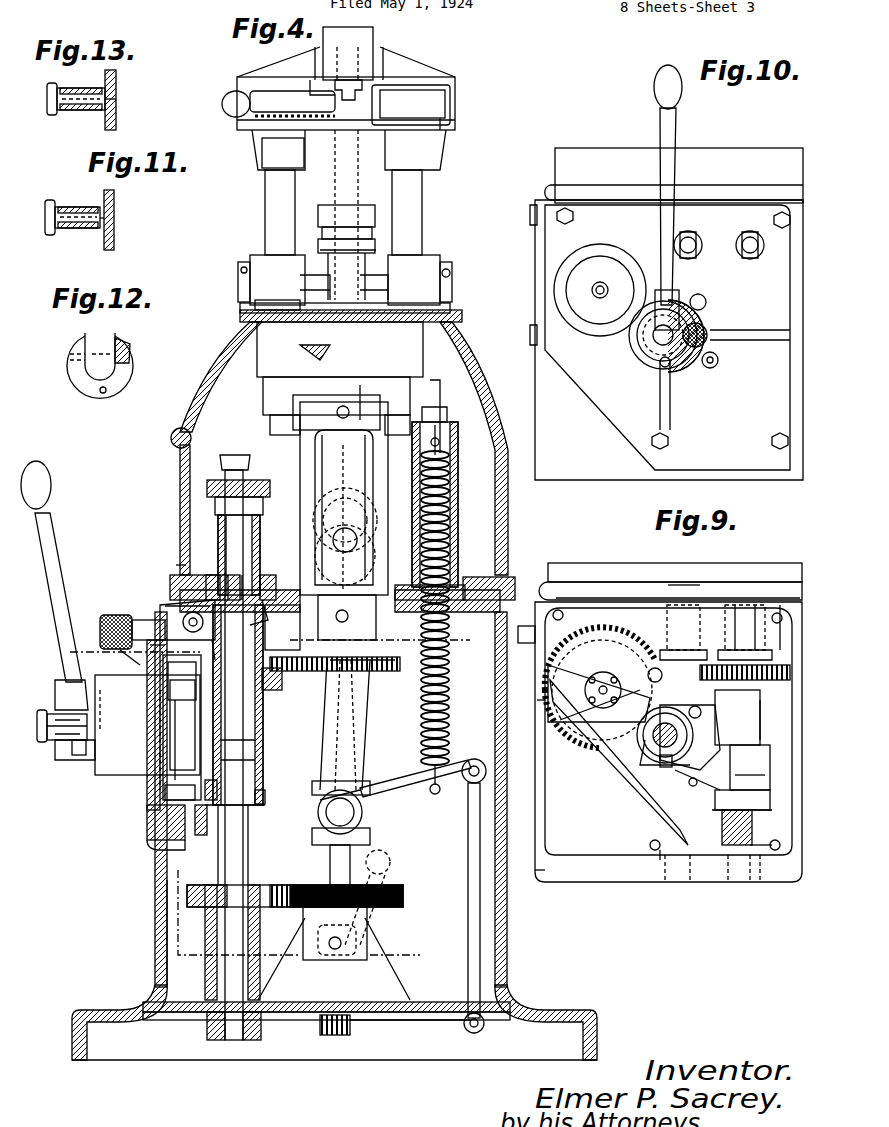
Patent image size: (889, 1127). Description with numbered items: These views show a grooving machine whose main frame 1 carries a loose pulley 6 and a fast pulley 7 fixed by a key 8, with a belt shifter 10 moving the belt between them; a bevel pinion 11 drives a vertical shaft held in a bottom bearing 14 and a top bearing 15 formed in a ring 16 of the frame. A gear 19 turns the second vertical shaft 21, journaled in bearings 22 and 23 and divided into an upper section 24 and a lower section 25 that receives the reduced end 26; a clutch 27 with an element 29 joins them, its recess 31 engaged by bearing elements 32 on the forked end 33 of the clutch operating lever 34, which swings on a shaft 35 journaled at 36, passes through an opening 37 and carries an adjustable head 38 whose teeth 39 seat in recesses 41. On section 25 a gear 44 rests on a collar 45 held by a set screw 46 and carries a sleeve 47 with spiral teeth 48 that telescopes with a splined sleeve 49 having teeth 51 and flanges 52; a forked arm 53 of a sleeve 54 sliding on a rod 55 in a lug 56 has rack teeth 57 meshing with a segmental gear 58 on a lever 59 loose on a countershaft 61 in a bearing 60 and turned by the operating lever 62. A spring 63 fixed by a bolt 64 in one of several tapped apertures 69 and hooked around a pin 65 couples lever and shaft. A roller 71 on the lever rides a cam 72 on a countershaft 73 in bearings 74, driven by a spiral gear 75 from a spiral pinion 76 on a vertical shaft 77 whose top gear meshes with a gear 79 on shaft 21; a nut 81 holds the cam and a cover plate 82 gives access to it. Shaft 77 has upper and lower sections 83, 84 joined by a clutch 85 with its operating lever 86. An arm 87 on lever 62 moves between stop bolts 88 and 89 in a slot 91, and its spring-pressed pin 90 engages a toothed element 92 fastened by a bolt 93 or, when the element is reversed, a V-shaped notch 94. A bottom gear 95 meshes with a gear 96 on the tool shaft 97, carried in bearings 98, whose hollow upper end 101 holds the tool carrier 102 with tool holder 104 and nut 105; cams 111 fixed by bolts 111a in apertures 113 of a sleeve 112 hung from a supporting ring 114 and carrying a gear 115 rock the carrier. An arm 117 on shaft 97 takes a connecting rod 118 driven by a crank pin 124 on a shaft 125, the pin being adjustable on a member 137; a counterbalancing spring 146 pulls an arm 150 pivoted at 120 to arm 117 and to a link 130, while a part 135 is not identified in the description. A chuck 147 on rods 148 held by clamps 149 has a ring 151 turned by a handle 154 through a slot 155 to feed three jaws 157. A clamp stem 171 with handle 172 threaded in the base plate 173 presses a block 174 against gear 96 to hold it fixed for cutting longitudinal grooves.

In FIG. 4, the main frame 1 is at (200, 386).
In FIG. 10, the main frame 1 is at (555, 170).
In FIG. 9, the main frame 1 is at (560, 566).
In FIG. 4, the loose pulley 6 is at (100, 638).
In FIG. 9, the loose pulley 6 is at (537, 636).
In FIG. 4, the fast pulley 7 is at (145, 660).
In FIG. 9, the fast pulley 7 is at (545, 690).
In FIG. 4, the key 8 is at (155, 878).
In FIG. 9, the key 8 is at (531, 880).
In FIG. 4, the belt shifter 10 is at (510, 586).
In FIG. 10, the second pinion 11 is at (688, 392).
In FIG. 4, the bearing 14 is at (222, 106).
In FIG. 10, the bearing 15 is at (550, 190).
In FIG. 4, the ring 16 is at (200, 578).
In FIG. 9, the ring 16 is at (576, 575).
In FIG. 4, the gear 19 is at (212, 503).
In FIG. 4, the second vertical shaft 21 is at (240, 476).
In FIG. 9, the second vertical shaft 21 is at (756, 600).
In FIG. 4, the bearing 22 is at (258, 546).
In FIG. 4, the bearing 23 is at (252, 965).
In FIG. 9, the bearing 23 is at (730, 600).
In FIG. 4, the upper section 24 is at (246, 520).
In FIG. 4, the lower section 25 is at (250, 836).
In FIG. 9, the lower section 25 is at (760, 882).
In FIG. 4, the reduced lower end 26 is at (258, 640).
In FIG. 4, the clutch 27 is at (276, 592).
In FIG. 9, the clutch 27 is at (789, 593).
In FIG. 4, the clutch element 29 is at (220, 580).
In FIG. 4, the circumferential recess 31 is at (242, 575).
In FIG. 4, the bearing elements 32 is at (228, 638).
In FIG. 4, the forked end 33 is at (180, 576).
In FIG. 4, the clutch operating lever 34 is at (150, 650).
In FIG. 10, the clutch operating lever 34 is at (764, 252).
In FIG. 4, the shaft 35 is at (165, 604).
In FIG. 4, the journal 36 is at (183, 616).
In FIG. 4, the opening 37 is at (135, 600).
In FIG. 4, the adjustable head 38 is at (112, 652).
In FIG. 4, the teeth 39 is at (100, 624).
In FIG. 4, the recesses 41 is at (135, 620).
In FIG. 4, the gear 44 is at (331, 655).
In FIG. 9, the gear 44 is at (718, 668).
In FIG. 4, the collar 45 is at (268, 678).
In FIG. 4, the set screw 46 is at (268, 690).
In FIG. 4, the sleeve 47 is at (262, 716).
In FIG. 9, the sleeve 47 is at (760, 706).
In FIG. 4, the spiral teeth 48 is at (262, 730).
In FIG. 4, the second sleeve 49 is at (262, 768).
In FIG. 9, the second sleeve 49 is at (765, 753).
In FIG. 4, the spirally arranged teeth 51 is at (249, 749).
In FIG. 4, the flanges 52 is at (262, 785).
In FIG. 9, the flanges 52 is at (760, 855).
In FIG. 4, the forked arm 53 is at (185, 790).
In FIG. 9, the forked arm 53 is at (712, 808).
In FIG. 4, the sleeve 54 is at (170, 808).
In FIG. 9, the sleeve 54 is at (765, 769).
In FIG. 4, the vertical rod 55 is at (195, 836).
In FIG. 9, the vertical rod 55 is at (737, 717).
In FIG. 4, the lug 56 is at (150, 840).
In FIG. 9, the lug 56 is at (722, 830).
In FIG. 9, the teeth 57 is at (720, 788).
In FIG. 9, the segmental gear 58 is at (690, 786).
In FIG. 4, the lever 59 is at (182, 723).
In FIG. 9, the lever 59 is at (682, 790).
In FIG. 4, the bearing 60 is at (158, 738).
In FIG. 10, the countershaft 61 is at (648, 352).
In FIG. 9, the countershaft 61 is at (652, 762).
In FIG. 4, the operating lever 62 is at (52, 542).
In FIG. 10, the operating lever 62 is at (684, 96).
In FIG. 4, the spring 63 is at (185, 765).
In FIG. 9, the spring 63 is at (648, 750).
In FIG. 9, the bolt 64 is at (692, 714).
In FIG. 9, the pin 65 is at (666, 766).
In FIG. 4, the tapped apertures 69 is at (120, 678).
In FIG. 9, the tapped apertures 69 is at (690, 752).
In FIG. 9, the roller 71 is at (652, 668).
In FIG. 4, the cam 72 is at (165, 682).
In FIG. 9, the cam 72 is at (634, 682).
In FIG. 9, the countershaft 73 is at (590, 684).
In FIG. 9, the bearings 74 is at (605, 670).
In FIG. 9, the spiral gear 75 is at (586, 752).
In FIG. 4, the spiral pinion 76 is at (295, 700).
In FIG. 9, the spiral pinion 76 is at (669, 714).
In FIG. 9, the vertical shaft 77 is at (703, 570).
In FIG. 4, the gear 79 is at (214, 480).
In FIG. 9, the nut 81 is at (600, 716).
In FIG. 10, the cover plate 82 is at (610, 246).
In FIG. 9, the upper section 83 is at (668, 580).
In FIG. 9, the lower section 84 is at (665, 880).
In FIG. 9, the clutch 85 is at (636, 600).
In FIG. 10, the operating lever 86 is at (704, 252).
In FIG. 13, the arm 87 is at (70, 114).
In FIG. 11, the arm 87 is at (78, 207).
In FIG. 4, the arm 87 is at (62, 745).
In FIG. 10, the arm 87 is at (722, 338).
In FIG. 4, the bolt 88 is at (82, 756).
In FIG. 10, the bolt 88 is at (720, 366).
In FIG. 10, the bolt 89 is at (700, 304).
In FIG. 13, the spring pressed pin 90 is at (92, 112).
In FIG. 11, the spring pressed pin 90 is at (90, 230).
In FIG. 4, the spring pressed pin 90 is at (160, 720).
In FIG. 10, the spring pressed pin 90 is at (718, 330).
In FIG. 4, the slot 91 is at (37, 725).
In FIG. 10, the slot 91 is at (704, 383).
In FIG. 13, the toothed element 92 is at (116, 123).
In FIG. 11, the toothed element 92 is at (114, 240).
In FIG. 12, the toothed element 92 is at (130, 374).
In FIG. 4, the toothed element 92 is at (145, 703).
In FIG. 10, the toothed element 92 is at (728, 320).
In FIG. 10, the bolt 93 is at (658, 364).
In FIG. 13, the notch 94 is at (116, 101).
In FIG. 12, the notch 94 is at (78, 372).
In FIG. 4, the gear 95 is at (262, 886).
In FIG. 4, the gear 96 is at (400, 898).
In FIG. 4, the shaft 97 is at (355, 868).
In FIG. 4, the bearings 98 is at (370, 920).
In FIG. 4, the hollow portion 101 is at (362, 247).
In FIG. 4, the tool carrier 102 is at (318, 240).
In FIG. 4, the tool holder 104 is at (335, 196).
In FIG. 4, the nut 105 is at (364, 214).
In FIG. 4, the cams 111 is at (310, 432).
In FIG. 4, the bolts 111a is at (343, 400).
In FIG. 4, the hollow sleeve 112 is at (295, 406).
In FIG. 4, the side apertures 113 is at (305, 456).
In FIG. 4, the supporting ring 114 is at (322, 386).
In FIG. 4, the gear 115 is at (356, 690).
In FIG. 4, the arm 117 is at (365, 790).
In FIG. 4, the connecting rod 118 is at (366, 710).
In FIG. 4, the pivot 120 is at (318, 838).
In FIG. 4, the crank pin 124 is at (368, 527).
In FIG. 4, the shaft 125 is at (366, 482).
In FIG. 4, the link 130 is at (470, 846).
In FIG. 4, the pin 135 is at (370, 400).
In FIG. 4, the member 137 is at (343, 509).
In FIG. 4, the spring 146 is at (440, 690).
In FIG. 4, the chuck 147 is at (445, 122).
In FIG. 4, the perpendicular rods 148 is at (395, 193).
In FIG. 4, the clamps 149 is at (255, 266).
In FIG. 4, the arm 150 is at (410, 800).
In FIG. 4, the ring 151 is at (320, 122).
In FIG. 4, the handle 154 is at (240, 113).
In FIG. 4, the slot 155 is at (306, 84).
In FIG. 4, the jaws 157 is at (262, 58).
In FIG. 4, the stem 171 is at (345, 945).
In FIG. 4, the crank 172 is at (386, 876).
In FIG. 4, the base plate 173 is at (376, 1020).
In FIG. 4, the block 174 is at (315, 955).